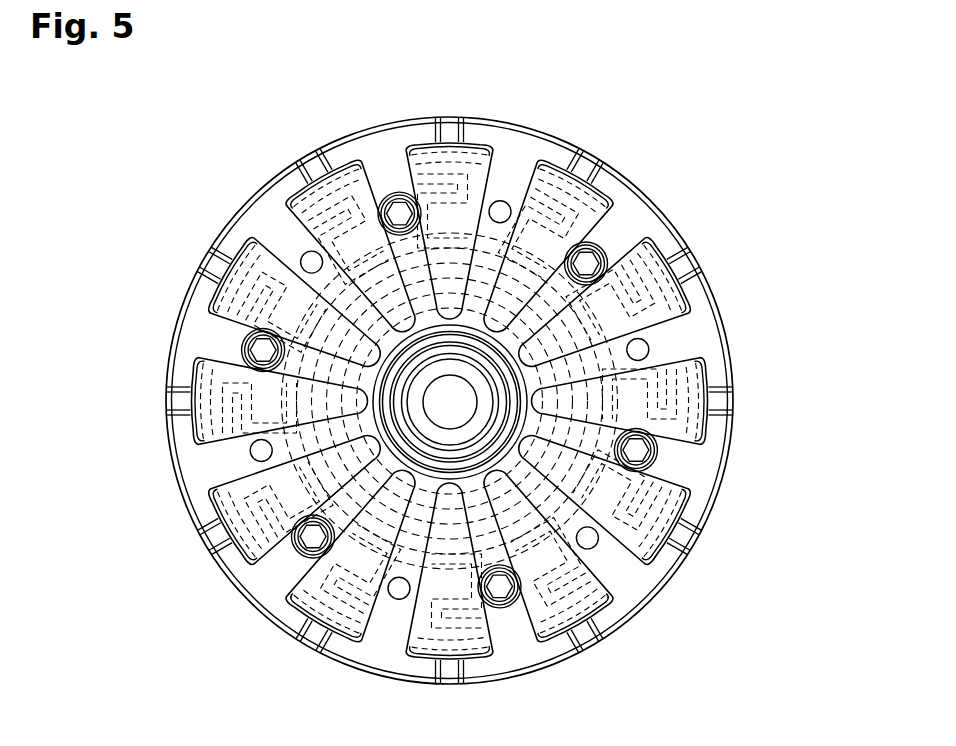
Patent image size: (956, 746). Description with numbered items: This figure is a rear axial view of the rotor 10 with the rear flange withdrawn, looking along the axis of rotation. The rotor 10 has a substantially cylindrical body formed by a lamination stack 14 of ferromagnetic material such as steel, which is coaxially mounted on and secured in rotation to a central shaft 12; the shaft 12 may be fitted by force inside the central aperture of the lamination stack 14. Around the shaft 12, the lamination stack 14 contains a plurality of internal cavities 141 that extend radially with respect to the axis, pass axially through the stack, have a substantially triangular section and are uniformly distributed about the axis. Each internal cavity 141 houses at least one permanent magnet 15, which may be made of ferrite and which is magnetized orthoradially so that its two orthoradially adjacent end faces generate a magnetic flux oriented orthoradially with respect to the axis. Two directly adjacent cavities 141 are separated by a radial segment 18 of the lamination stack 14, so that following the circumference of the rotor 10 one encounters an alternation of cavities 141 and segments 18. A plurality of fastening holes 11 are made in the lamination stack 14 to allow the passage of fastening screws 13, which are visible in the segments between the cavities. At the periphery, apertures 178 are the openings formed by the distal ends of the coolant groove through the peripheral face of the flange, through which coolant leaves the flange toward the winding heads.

The rotor 10 is at (498, 400).
The fastening holes 11 is at (500, 200).
The shaft 12 is at (314, 402).
The fastening screws 13 is at (606, 249).
The lamination stack 14 is at (260, 196).
The internal cavities 141 is at (195, 491).
The permanent magnets 15 is at (300, 595).
The radial segment 18 is at (613, 564).
The apertures 178 is at (746, 397).